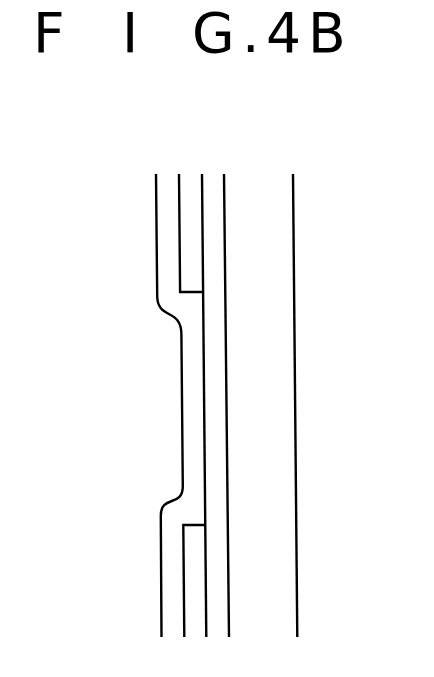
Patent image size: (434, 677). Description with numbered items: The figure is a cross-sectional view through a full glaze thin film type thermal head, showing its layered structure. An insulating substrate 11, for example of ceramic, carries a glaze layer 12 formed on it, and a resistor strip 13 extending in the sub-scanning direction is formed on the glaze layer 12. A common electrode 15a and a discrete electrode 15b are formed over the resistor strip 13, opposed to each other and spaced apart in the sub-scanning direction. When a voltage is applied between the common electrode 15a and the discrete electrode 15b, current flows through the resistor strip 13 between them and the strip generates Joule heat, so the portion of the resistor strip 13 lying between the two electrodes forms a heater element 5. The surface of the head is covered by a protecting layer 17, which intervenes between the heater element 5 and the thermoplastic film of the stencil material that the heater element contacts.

The common electrode 15a is at (188, 210).
The discrete electrode 15b is at (192, 613).
The resistor strip 13 is at (213, 341).
The protecting layer 17 is at (188, 479).
The heater element 5 is at (282, 405).
The glaze layer 12 is at (261, 405).
The insulating substrate 11 is at (318, 405).